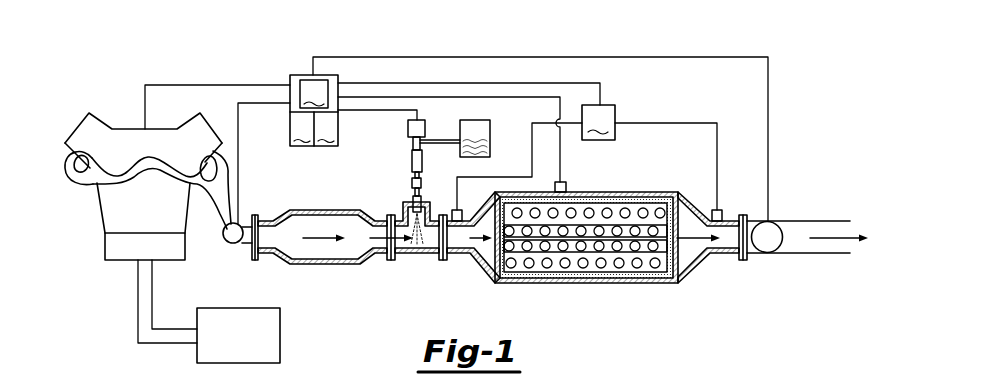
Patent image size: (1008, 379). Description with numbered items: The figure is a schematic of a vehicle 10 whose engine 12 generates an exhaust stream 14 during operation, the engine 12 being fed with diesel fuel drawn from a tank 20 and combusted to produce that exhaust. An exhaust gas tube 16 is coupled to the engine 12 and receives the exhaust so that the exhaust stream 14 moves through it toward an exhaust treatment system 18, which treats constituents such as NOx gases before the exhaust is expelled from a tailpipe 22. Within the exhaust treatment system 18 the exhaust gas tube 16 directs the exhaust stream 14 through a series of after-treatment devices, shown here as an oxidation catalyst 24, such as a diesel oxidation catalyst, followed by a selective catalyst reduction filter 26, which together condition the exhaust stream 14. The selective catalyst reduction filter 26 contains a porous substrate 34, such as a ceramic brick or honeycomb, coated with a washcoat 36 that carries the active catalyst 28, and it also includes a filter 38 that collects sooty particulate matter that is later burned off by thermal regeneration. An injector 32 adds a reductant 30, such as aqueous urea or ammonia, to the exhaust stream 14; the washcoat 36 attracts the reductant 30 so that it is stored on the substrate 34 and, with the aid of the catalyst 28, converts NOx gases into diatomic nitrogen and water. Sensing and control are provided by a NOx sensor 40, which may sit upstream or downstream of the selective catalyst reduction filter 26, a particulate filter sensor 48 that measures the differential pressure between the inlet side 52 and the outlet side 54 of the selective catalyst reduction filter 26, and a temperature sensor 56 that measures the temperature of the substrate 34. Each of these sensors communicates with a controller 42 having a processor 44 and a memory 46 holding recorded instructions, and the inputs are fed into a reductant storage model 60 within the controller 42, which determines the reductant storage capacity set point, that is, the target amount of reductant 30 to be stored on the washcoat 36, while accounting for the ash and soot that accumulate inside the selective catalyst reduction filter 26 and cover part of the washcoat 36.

The vehicle 10 is at (122, 34).
The engine 12 is at (110, 202).
The exhaust stream 14 is at (312, 243).
The exhaust gas tube 16 is at (213, 213).
The exhaust treatment system 18 is at (802, 190).
The tank 20 is at (282, 337).
The tailpipe 22 is at (825, 255).
The oxidation catalyst 24 is at (350, 265).
The selective catalyst reduction filter 26 is at (548, 283).
The catalyst 28 is at (635, 198).
The reductant 30 is at (479, 132).
The injector 32 is at (413, 185).
The substrate 34 is at (625, 265).
The washcoat 36 is at (670, 263).
The filter 38 is at (598, 212).
The NOx sensor 40 is at (248, 246).
The controller 42 is at (300, 75).
The processor 44 is at (302, 131).
The memory 46 is at (326, 131).
The particulate filter sensor 48 is at (598, 122).
The inlet side 52 is at (475, 267).
The outlet side 54 is at (690, 205).
The temperature sensor 56 is at (568, 183).
The reductant storage model 60 is at (314, 94).